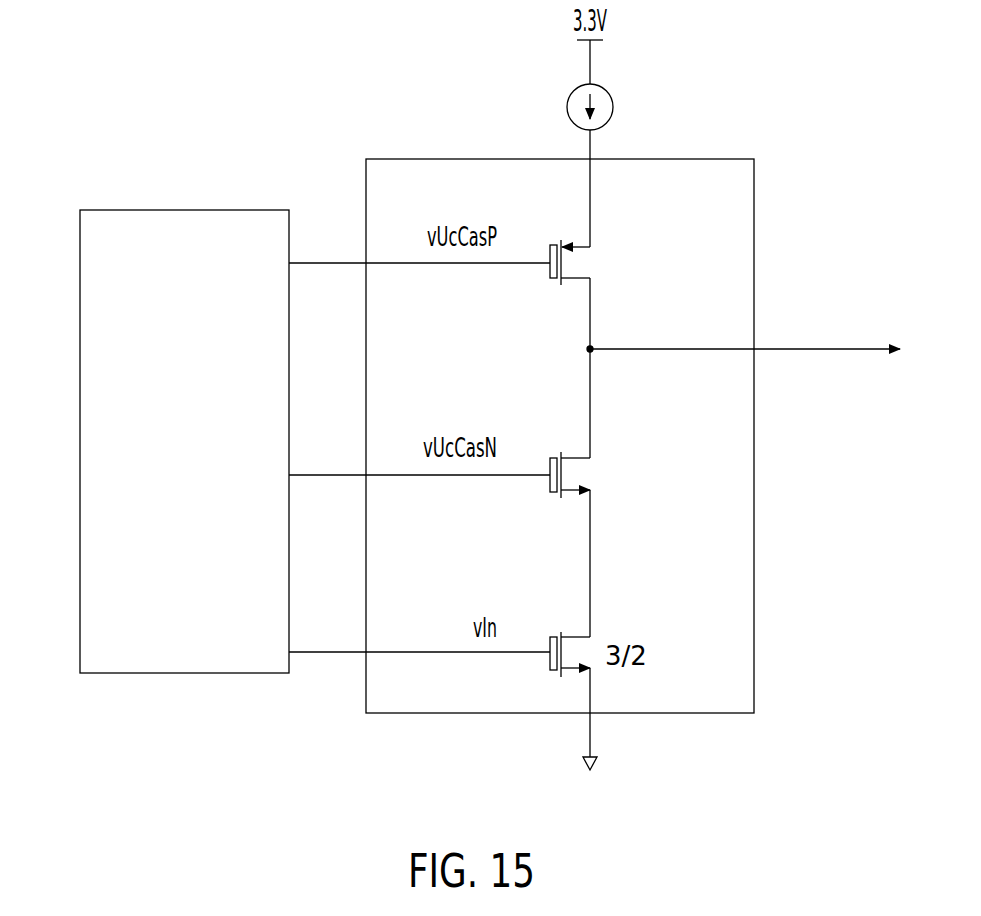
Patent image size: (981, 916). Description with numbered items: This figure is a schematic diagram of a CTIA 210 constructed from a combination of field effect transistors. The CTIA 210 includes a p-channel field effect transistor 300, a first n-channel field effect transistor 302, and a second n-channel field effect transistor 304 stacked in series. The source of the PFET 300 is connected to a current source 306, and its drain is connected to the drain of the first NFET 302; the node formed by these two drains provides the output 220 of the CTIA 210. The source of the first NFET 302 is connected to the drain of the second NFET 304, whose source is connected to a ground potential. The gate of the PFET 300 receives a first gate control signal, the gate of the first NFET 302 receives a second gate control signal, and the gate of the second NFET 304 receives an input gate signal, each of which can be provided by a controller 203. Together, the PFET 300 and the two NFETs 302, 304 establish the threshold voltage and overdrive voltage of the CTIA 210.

The controller 203 is at (113, 207).
The CTIA 210 is at (413, 157).
The output 220 is at (826, 346).
The p-channel field effect transistor 300 is at (561, 245).
The first n-channel field effect transistor 302 is at (561, 458).
The second n-channel field effect transistor 304 is at (561, 637).
The current source 306 is at (606, 107).